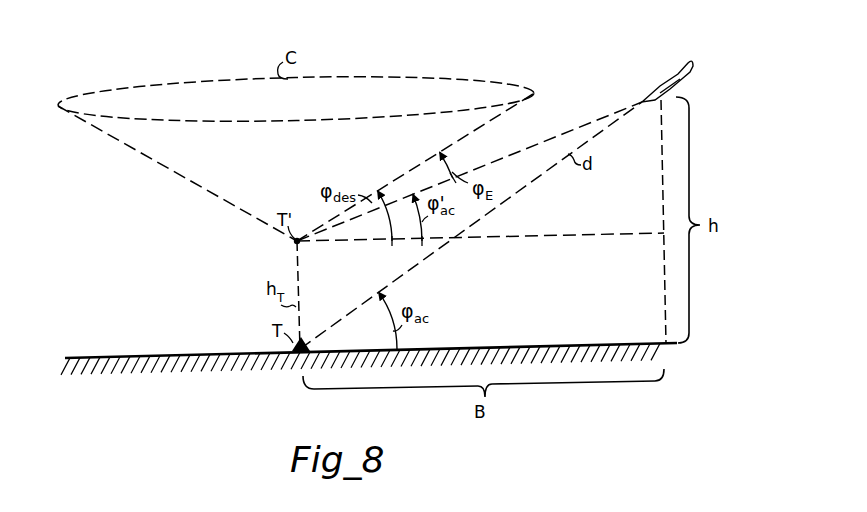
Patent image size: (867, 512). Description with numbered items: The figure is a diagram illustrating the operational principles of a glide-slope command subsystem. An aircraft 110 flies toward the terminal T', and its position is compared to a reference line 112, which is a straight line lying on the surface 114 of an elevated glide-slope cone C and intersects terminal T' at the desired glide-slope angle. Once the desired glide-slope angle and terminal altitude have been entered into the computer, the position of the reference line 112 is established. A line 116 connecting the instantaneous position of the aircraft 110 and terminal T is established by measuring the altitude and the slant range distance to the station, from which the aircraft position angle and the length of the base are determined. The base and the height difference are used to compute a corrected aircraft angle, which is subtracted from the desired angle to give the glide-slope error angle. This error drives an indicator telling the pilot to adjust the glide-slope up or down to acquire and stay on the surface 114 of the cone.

The aircraft 110 is at (688, 64).
The reference line 112 is at (420, 168).
The surface 114 is at (194, 181).
The line 116 is at (530, 185).